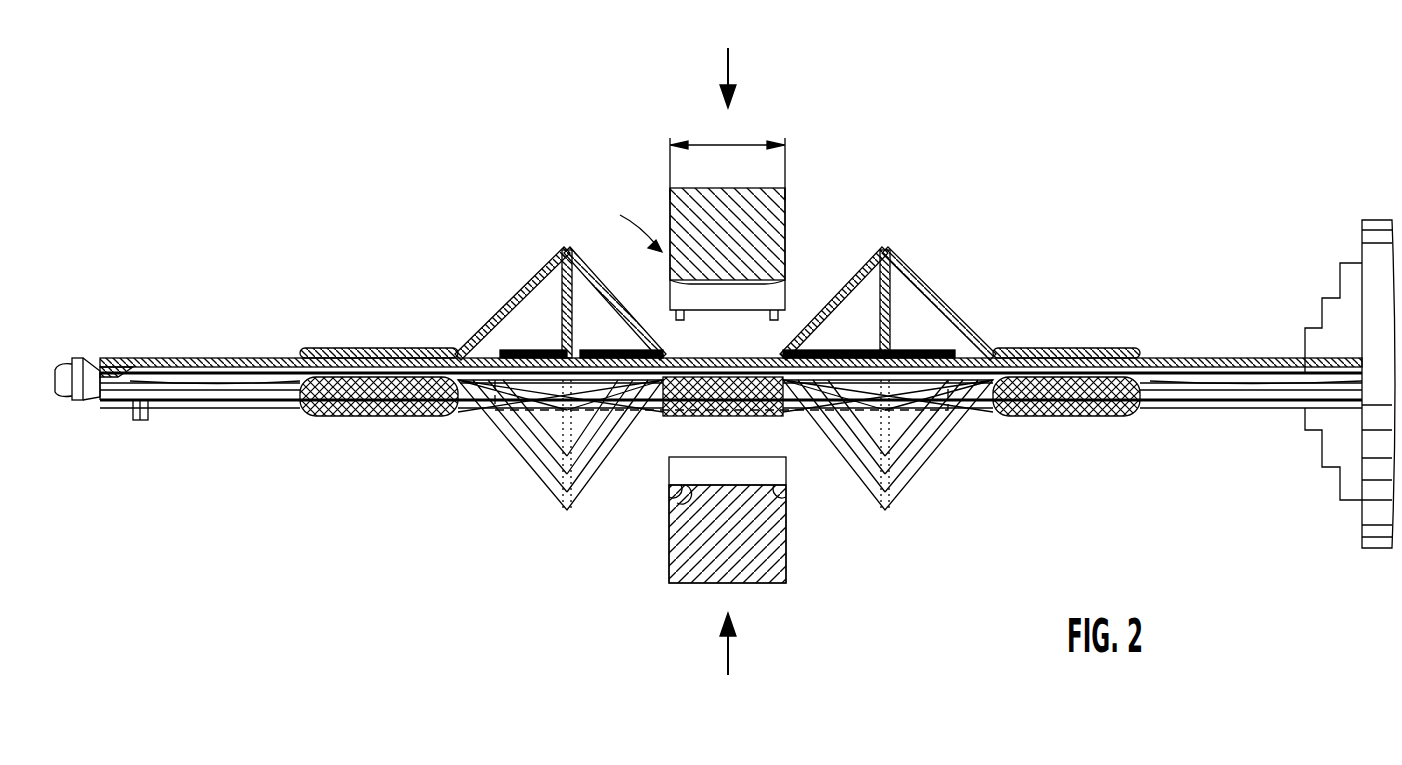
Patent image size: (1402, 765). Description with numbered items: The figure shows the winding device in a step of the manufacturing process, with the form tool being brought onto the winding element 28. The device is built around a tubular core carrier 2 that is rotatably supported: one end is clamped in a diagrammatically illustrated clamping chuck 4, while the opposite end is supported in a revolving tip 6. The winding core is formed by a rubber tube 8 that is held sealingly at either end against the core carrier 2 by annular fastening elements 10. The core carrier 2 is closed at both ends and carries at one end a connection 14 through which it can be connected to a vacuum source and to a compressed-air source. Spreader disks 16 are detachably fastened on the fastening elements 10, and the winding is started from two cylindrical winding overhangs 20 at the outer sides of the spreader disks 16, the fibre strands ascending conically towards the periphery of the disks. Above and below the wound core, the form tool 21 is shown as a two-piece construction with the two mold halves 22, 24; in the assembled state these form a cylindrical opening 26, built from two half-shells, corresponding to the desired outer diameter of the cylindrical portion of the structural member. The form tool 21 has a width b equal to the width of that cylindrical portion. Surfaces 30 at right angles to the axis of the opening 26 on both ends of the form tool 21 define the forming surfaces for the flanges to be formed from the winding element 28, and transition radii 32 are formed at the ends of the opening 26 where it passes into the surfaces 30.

The core carrier 2 is at (1245, 362).
The clamping chuck 4 is at (1365, 520).
The revolving tip 6 is at (80, 358).
The rubber tube 8 is at (840, 352).
The annular fastening elements 10 is at (935, 350).
The connection 14 is at (142, 422).
The spreader disks 16 is at (562, 282).
The cylindrical winding overhangs 20 is at (365, 356).
The form tool 21 is at (627, 223).
The mold half 22 is at (787, 240).
The mold half 24 is at (787, 545).
The cylindrical opening 26 is at (705, 480).
The winding element 28 is at (598, 495).
The surfaces 30 is at (668, 195).
The transition radii 32 is at (672, 512).